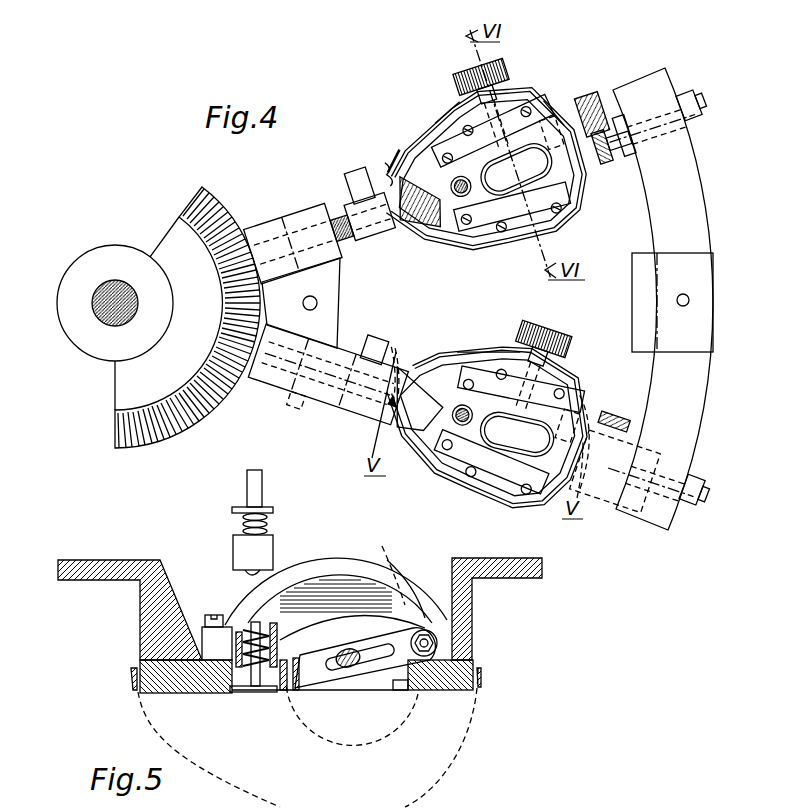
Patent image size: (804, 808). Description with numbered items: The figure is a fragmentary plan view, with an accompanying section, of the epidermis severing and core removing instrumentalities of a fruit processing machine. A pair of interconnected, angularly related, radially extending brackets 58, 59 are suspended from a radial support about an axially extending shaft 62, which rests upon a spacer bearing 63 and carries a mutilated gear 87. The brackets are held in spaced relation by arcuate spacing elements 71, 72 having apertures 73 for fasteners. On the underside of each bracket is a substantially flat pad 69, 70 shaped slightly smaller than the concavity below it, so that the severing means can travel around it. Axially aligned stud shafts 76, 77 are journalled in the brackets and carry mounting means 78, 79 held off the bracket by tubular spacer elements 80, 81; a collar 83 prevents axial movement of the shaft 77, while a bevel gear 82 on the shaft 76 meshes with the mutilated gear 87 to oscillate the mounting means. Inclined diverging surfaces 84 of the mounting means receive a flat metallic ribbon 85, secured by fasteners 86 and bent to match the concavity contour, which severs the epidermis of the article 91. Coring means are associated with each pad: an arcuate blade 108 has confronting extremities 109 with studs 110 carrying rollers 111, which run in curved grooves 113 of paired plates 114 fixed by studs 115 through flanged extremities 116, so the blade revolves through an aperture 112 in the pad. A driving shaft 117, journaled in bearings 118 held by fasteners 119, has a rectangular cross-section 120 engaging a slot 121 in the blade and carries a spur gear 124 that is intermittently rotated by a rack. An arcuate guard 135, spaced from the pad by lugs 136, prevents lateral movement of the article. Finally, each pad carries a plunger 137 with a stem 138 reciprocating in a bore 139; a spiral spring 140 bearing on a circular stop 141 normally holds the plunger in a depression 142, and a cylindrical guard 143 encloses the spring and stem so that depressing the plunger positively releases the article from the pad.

In FIG. 4, the bracket 58 is at (298, 212).
In FIG. 4, the bracket 59 is at (310, 396).
In FIG. 4, the shaft 62 is at (100, 318).
In FIG. 4, the spacer bearing 63 is at (124, 266).
In FIG. 4, the pad 69 is at (555, 145).
In FIG. 4, the pad 70 is at (465, 362).
In FIG. 5, the pad 70 is at (430, 692).
In FIG. 4, the arcuate spacing element 71 is at (325, 292).
In FIG. 4, the arcuate spacing element 72 is at (690, 188).
In FIG. 4, the aperture 73 is at (690, 300).
In FIG. 4, the stud shaft 76 is at (385, 222).
In FIG. 4, the stud shaft 77 is at (632, 150).
In FIG. 4, the mounting means 78 is at (357, 190).
In FIG. 4, the mounting means 79 is at (605, 110).
In FIG. 4, the tubular spacer element 80 is at (347, 236).
In FIG. 4, the tubular spacer element 81 is at (612, 140).
In FIG. 4, the bevel gear 82 is at (224, 206).
In FIG. 4, the collar 83 is at (690, 92).
In FIG. 4, the inclined diverging surface 84 is at (370, 178).
In FIG. 4, the metallic ribbon 85 is at (396, 180).
In FIG. 5, the metallic ribbon 85 is at (133, 680).
In FIG. 4, the fastener 86 is at (400, 170).
In FIG. 4, the mutilated gear 87 is at (208, 194).
In FIG. 5, the article 91 is at (440, 786).
In FIG. 4, the arcuate blade 108 is at (502, 174).
In FIG. 5, the arcuate blade 108 is at (332, 692).
In FIG. 4, the confronting extremity 109 is at (582, 430).
In FIG. 5, the confronting extremity 109 is at (432, 620).
In FIG. 5, the stud 110 is at (420, 632).
In FIG. 4, the roller 111 is at (578, 182).
In FIG. 5, the roller 111 is at (392, 600).
In FIG. 5, the aperture 112 is at (400, 702).
In FIG. 5, the curved groove 113 is at (340, 565).
In FIG. 5, the plate 114 is at (300, 574).
In FIG. 4, the stud 115 is at (455, 240).
In FIG. 5, the stud 115 is at (211, 618).
In FIG. 4, the flanged extremity 116 is at (452, 228).
In FIG. 5, the flanged extremity 116 is at (214, 630).
In FIG. 4, the driving shaft 117 is at (500, 90).
In FIG. 4, the bearing 118 is at (455, 112).
In FIG. 4, the fastener 119 is at (449, 128).
In FIG. 5, the rectangular cross-section 120 is at (312, 680).
In FIG. 5, the slot 121 is at (372, 668).
In FIG. 4, the spur gear 124 is at (500, 65).
In FIG. 4, the arcuate guard 135 is at (435, 130).
In FIG. 4, the lug 136 is at (415, 150).
In FIG. 5, the plunger 137 is at (250, 692).
In FIG. 4, the stem 138 is at (437, 440).
In FIG. 5, the stem 138 is at (253, 490).
In FIG. 5, the bore 139 is at (300, 664).
In FIG. 5, the spiral spring 140 is at (242, 522).
In FIG. 5, the circular stop 141 is at (235, 508).
In FIG. 5, the depression 142 is at (240, 692).
In FIG. 5, the cylindrical guard 143 is at (275, 555).